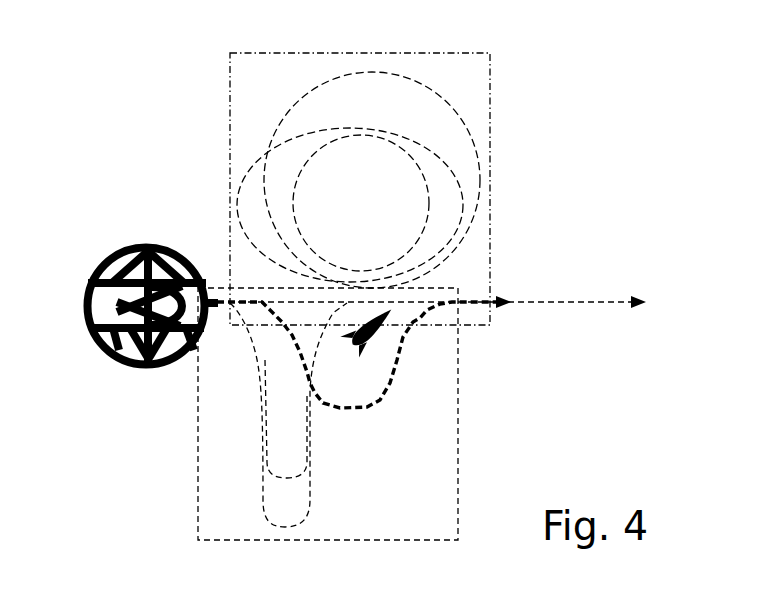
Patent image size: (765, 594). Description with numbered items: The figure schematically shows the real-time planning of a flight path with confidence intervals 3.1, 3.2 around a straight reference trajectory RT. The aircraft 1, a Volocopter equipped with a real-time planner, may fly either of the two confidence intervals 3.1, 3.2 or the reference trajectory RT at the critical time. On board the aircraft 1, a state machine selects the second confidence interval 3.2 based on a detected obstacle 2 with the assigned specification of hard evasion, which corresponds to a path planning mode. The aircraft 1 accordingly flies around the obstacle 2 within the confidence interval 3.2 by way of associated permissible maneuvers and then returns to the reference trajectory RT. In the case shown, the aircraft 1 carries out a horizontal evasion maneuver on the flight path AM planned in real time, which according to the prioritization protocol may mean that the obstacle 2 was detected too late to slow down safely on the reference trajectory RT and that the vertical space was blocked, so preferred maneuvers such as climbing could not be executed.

The aircraft 1 is at (142, 228).
The obstacle 2 is at (362, 328).
The confidence interval 3.1 is at (421, 183).
The confidence interval 3.2 is at (404, 414).
The reference trajectory RT is at (428, 255).
The flight path AM is at (193, 415).